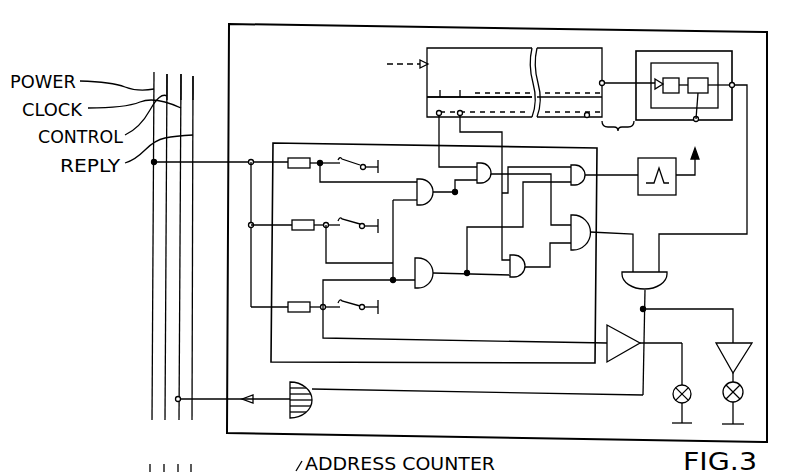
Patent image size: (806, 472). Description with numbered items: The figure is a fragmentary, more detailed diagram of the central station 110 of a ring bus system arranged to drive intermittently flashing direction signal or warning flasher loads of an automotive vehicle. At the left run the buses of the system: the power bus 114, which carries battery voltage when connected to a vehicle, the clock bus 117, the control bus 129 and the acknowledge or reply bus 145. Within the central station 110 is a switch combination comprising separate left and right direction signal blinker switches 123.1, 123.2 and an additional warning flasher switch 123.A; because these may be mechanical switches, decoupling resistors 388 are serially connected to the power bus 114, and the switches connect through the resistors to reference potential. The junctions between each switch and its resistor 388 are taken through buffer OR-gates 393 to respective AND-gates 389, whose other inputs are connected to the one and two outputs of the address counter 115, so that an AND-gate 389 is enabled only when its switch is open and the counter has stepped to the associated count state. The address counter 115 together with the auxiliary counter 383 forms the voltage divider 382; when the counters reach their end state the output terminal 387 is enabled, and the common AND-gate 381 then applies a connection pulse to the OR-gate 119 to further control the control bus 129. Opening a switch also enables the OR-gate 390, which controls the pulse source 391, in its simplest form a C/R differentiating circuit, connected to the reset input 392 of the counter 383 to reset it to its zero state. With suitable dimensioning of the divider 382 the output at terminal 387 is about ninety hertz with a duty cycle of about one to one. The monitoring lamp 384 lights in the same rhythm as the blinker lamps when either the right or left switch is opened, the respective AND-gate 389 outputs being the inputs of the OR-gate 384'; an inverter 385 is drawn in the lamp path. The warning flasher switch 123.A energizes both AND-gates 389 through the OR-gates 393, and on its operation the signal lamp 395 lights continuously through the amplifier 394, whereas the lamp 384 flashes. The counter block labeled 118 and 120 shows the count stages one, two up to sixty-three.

The central station 110 is at (259, 48).
The power bus 114 is at (154, 72).
The address counter 115 is at (425, 60).
The clock bus 117 is at (167, 76).
The counter output line 118 is at (603, 81).
The OR-gate 119 is at (290, 389).
The address counter 120 is at (426, 101).
The control bus 129 is at (181, 76).
The reply bus 145 is at (193, 78).
The left direction signal blinker switch 123.1 is at (352, 157).
The right direction signal blinker switch 123.2 is at (349, 214).
The warning flasher switch 123.A is at (348, 309).
The common AND-gate 381 is at (664, 277).
The voltage divider 382 is at (621, 135).
The auxiliary counter 383 is at (724, 56).
The monitoring lamp 384 is at (721, 398).
The OR-gate 384' is at (590, 273).
The inverter 385 is at (727, 346).
The output terminal 387 is at (745, 88).
The decoupling resistor 388 is at (295, 169).
The AND-gate 389 is at (478, 165).
The OR-gate 390 is at (576, 187).
The pulse source 391 is at (677, 191).
The reset input 392 is at (695, 122).
The buffer OR-gate 393 is at (418, 256).
The amplifier 394 is at (613, 357).
The signal lamp 395 is at (674, 399).